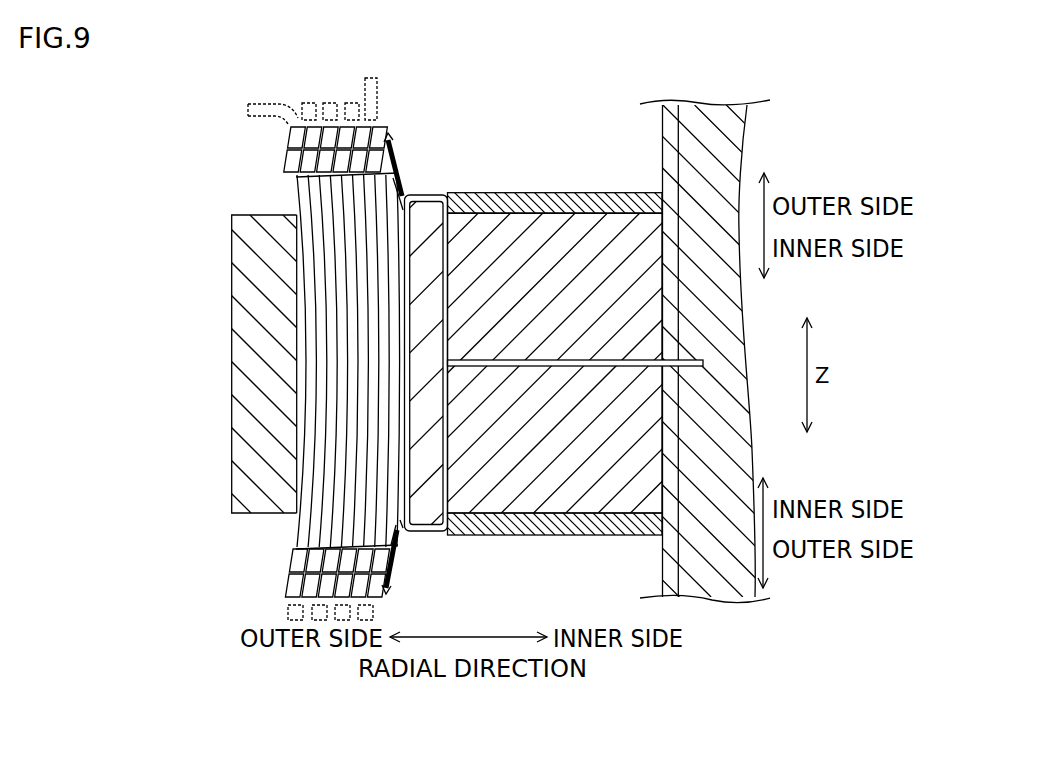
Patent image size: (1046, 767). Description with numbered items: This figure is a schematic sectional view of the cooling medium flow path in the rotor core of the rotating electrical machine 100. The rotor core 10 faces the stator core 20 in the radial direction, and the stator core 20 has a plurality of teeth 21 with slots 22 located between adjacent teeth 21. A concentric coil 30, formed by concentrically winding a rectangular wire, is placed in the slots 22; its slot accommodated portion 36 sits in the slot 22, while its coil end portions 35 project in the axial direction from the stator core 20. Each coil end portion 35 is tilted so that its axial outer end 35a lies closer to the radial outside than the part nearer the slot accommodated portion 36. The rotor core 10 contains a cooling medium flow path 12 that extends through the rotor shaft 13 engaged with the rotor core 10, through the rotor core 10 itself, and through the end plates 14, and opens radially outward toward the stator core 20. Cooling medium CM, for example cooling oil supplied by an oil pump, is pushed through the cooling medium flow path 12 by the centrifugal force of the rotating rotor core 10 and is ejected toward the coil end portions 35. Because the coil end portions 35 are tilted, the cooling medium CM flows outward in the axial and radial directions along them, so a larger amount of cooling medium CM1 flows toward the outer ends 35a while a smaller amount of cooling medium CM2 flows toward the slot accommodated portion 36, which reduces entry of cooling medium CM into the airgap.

The rotating electrical machine 100 is at (569, 334).
The rotor shaft 13 is at (712, 150).
The rotor core 10 is at (556, 255).
The end plates 14 is at (507, 200).
The cooling medium flow path 12 is at (572, 360).
The teeth 21 is at (410, 258).
The stator core 20 is at (266, 315).
The slot accommodated portion 36 is at (300, 368).
The slots 22 is at (300, 410).
The concentric coil 30 is at (312, 343).
The coil end portions 35 is at (281, 362).
The axial outer end 35a is at (333, 102).
The cooling medium CM is at (409, 200).
The cooling medium flowing toward the outer ends CM1 is at (397, 165).
The cooling medium flowing toward the slot accommodated portion CM2 is at (398, 207).